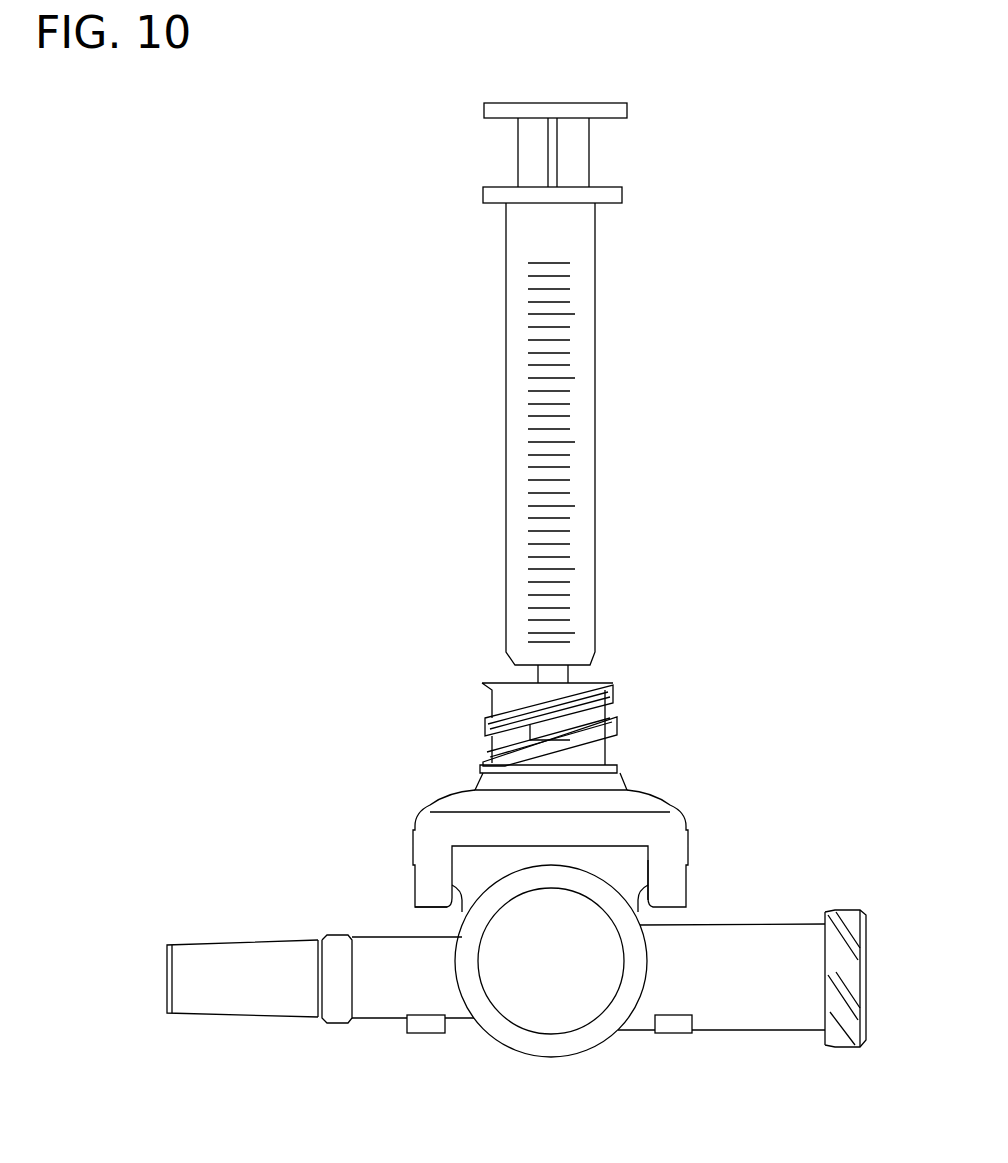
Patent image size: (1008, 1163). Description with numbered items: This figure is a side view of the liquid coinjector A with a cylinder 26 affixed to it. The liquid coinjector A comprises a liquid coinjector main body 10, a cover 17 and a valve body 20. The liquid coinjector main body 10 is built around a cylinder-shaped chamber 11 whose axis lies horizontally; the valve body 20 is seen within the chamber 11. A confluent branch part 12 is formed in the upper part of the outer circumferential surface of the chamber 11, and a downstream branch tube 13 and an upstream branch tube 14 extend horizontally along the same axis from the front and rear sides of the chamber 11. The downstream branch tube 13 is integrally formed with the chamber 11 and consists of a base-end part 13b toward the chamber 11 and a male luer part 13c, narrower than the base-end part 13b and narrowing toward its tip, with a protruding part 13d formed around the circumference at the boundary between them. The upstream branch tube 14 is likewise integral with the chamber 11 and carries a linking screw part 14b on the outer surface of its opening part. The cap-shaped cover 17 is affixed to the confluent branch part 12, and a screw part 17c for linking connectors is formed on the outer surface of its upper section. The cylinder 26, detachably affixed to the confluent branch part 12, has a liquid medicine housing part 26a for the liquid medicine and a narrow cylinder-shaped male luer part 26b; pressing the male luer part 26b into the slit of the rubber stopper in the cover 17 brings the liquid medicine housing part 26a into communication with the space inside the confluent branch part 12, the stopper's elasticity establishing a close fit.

The liquid coinjector main body 10 is at (770, 850).
The chamber 11 is at (517, 1043).
The confluent branch part 12 is at (630, 877).
The downstream branch tube 13 is at (320, 941).
The base-end part 13b is at (413, 962).
The male luer part 13c is at (266, 950).
The protruding part 13d is at (328, 950).
The upstream branch tube 14 is at (748, 1023).
The linking screw part 14b is at (840, 910).
The cover 17 is at (633, 802).
The screw part 17c is at (490, 731).
The valve body 20 is at (545, 1009).
The cylinder 26 is at (572, 255).
The liquid medicine housing part 26a is at (594, 414).
The male luer part 26b is at (570, 680).
The liquid coinjector A is at (743, 750).